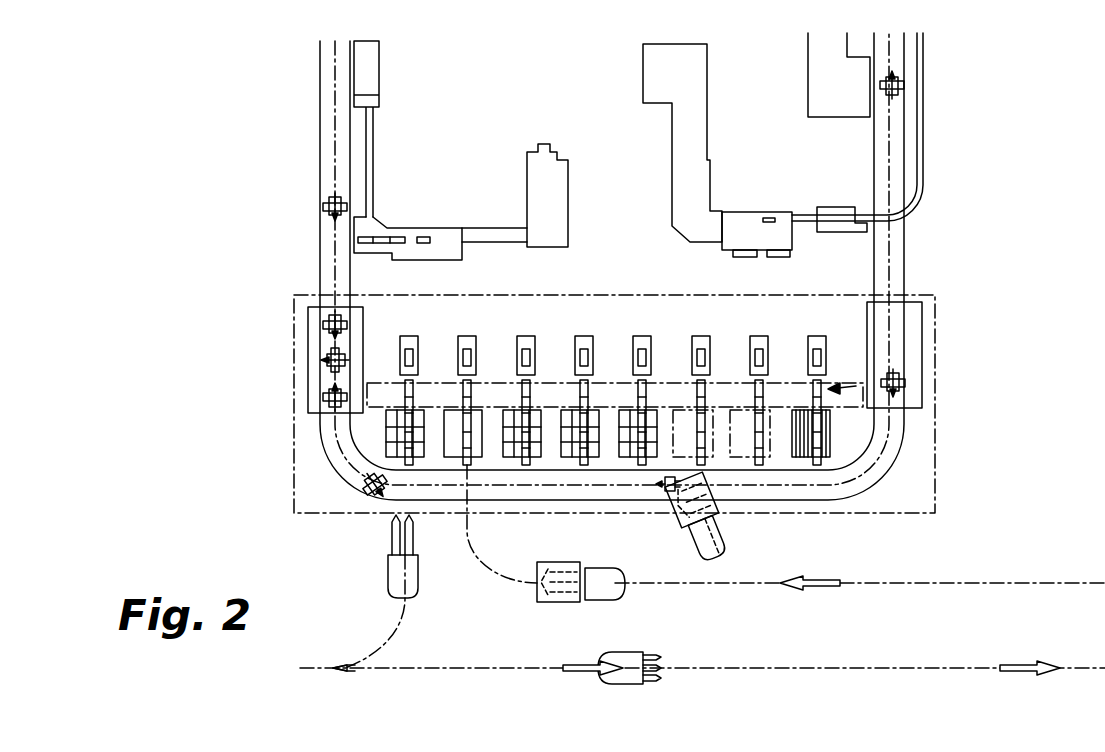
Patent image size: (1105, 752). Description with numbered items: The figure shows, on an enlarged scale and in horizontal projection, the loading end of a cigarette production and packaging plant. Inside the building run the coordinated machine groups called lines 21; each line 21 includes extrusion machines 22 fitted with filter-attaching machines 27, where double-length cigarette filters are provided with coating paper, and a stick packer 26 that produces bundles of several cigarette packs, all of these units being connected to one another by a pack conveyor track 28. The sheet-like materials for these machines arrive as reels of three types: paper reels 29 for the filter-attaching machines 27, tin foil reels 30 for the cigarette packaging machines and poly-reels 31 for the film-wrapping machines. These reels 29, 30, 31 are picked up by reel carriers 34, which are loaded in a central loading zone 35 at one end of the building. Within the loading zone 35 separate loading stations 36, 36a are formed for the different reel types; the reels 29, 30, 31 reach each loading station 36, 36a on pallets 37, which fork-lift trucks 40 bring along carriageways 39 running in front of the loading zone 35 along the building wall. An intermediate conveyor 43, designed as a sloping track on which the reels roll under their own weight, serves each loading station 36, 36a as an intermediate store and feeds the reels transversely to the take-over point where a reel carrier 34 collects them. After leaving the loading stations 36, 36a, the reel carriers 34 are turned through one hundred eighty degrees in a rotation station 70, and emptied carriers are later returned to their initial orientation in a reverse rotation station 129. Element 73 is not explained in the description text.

The line 21 is at (429, 196).
The extrusion machine 22 is at (724, 190).
The stick packer 26 is at (558, 196).
The filter-attaching machine 27 is at (752, 222).
The pack conveyor track 28 is at (925, 152).
The paper reel 29 is at (900, 84).
The tin foil reel 30 is at (323, 210).
The poly-reel 31 is at (467, 352).
The reel carrier 34 is at (323, 205).
The loading zone 35 is at (935, 428).
The loading station 36 is at (368, 447).
The loading station 36a is at (449, 470).
The pallet 37 is at (387, 418).
The carriageway 39 is at (917, 665).
The fork-lift truck 40 is at (397, 578).
The intermediate conveyor 43 is at (582, 393).
The rotation station 70 is at (308, 348).
The contact strip 73 is at (356, 248).
The reverse rotation station 129 is at (922, 325).